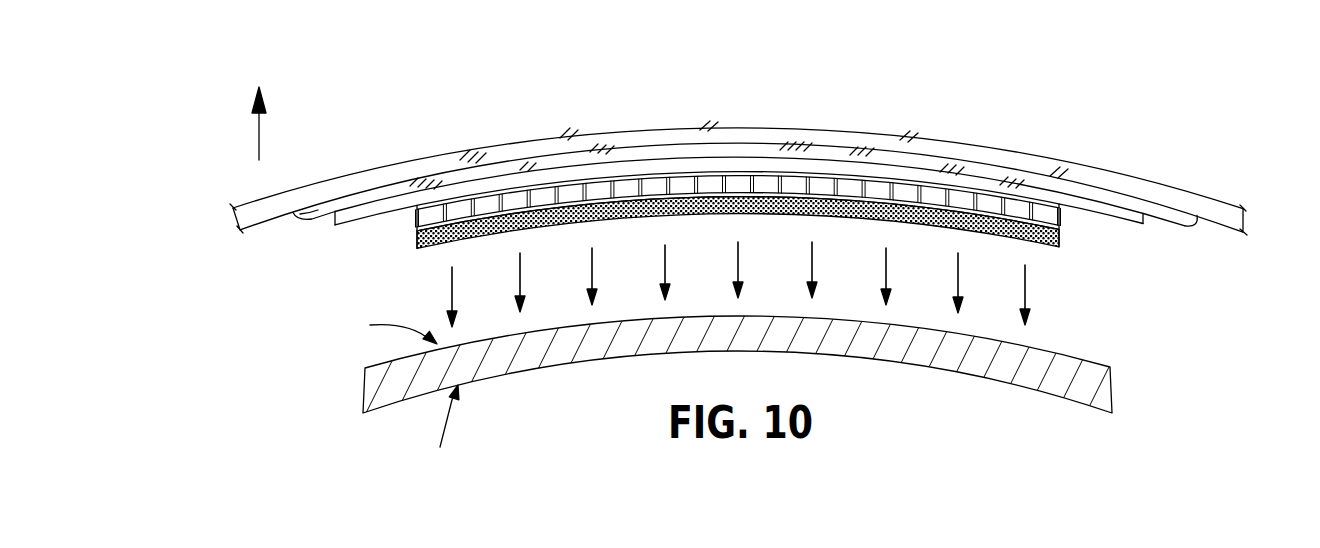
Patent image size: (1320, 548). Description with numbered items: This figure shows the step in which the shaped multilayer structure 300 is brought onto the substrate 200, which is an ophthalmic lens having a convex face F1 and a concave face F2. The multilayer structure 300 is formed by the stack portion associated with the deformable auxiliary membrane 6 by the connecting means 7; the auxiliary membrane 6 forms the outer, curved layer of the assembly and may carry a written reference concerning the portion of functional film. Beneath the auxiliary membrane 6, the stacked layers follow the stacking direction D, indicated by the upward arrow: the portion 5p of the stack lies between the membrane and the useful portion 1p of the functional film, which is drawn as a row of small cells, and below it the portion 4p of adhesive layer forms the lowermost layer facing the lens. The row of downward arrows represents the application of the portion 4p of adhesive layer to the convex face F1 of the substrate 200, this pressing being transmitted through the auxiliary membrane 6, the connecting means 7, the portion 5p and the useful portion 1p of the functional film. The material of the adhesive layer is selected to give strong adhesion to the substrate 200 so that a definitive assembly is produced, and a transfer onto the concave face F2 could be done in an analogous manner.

The multilayer structure 300 is at (738, 185).
The auxiliary membrane 6 is at (1192, 200).
The portion of layer 5 5p is at (775, 166).
The connecting means 7 is at (313, 212).
The useful portion of the functional film 1p is at (647, 188).
The portion of adhesive layer 4p is at (1048, 247).
The substrate 200 is at (1042, 373).
The stacking direction D is at (270, 123).
The convex face F1 is at (387, 327).
The concave face F2 is at (440, 432).